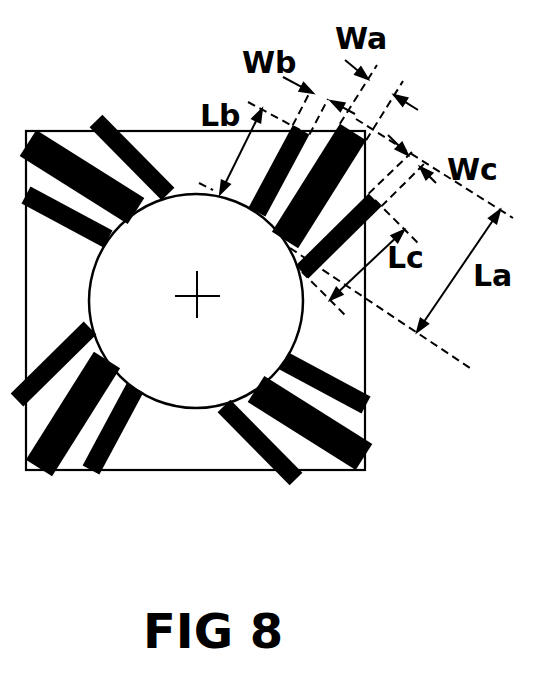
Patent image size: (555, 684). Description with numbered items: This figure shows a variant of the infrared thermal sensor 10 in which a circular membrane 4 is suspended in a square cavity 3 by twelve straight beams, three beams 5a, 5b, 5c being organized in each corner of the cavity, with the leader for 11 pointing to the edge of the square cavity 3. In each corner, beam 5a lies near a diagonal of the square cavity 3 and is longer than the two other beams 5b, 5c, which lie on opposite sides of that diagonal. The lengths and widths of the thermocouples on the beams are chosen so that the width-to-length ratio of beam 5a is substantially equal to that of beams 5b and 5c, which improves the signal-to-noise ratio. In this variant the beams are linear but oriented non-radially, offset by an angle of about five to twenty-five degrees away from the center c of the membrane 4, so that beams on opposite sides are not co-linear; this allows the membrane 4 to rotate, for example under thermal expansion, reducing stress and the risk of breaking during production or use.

The square cavity 3 is at (60, 304).
The circular membrane 4 is at (175, 407).
The beam 5a is at (283, 226).
The beam 5b is at (265, 183).
The beam 5c is at (300, 286).
The infrared thermal sensor 10 is at (196, 360).
The side surface 11 is at (152, 471).
The center of the membrane c is at (193, 300).